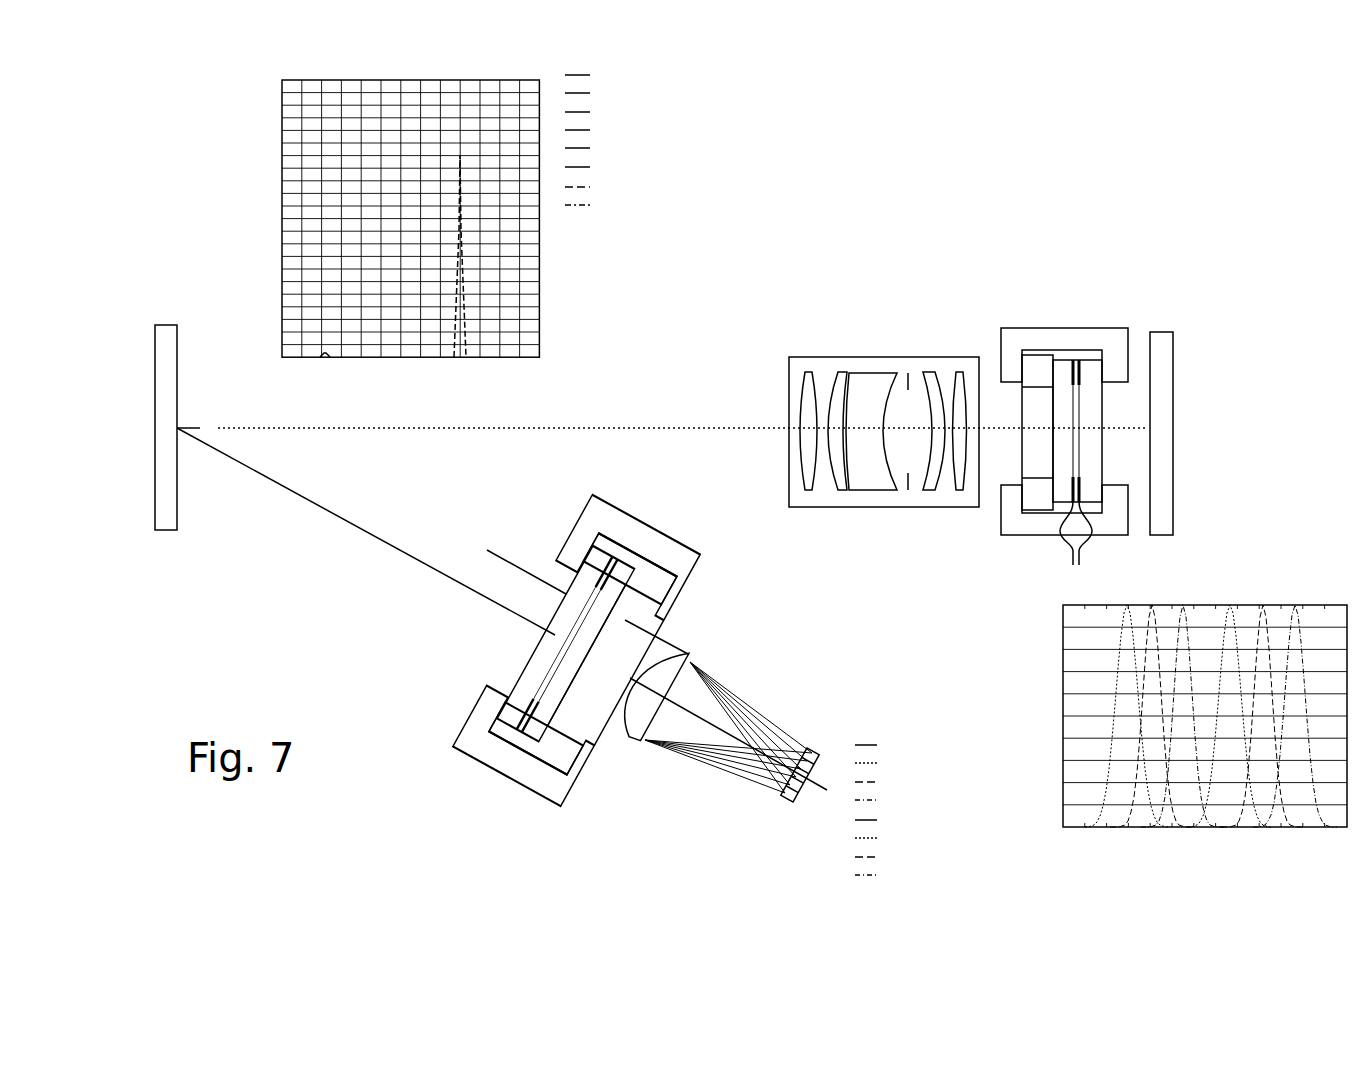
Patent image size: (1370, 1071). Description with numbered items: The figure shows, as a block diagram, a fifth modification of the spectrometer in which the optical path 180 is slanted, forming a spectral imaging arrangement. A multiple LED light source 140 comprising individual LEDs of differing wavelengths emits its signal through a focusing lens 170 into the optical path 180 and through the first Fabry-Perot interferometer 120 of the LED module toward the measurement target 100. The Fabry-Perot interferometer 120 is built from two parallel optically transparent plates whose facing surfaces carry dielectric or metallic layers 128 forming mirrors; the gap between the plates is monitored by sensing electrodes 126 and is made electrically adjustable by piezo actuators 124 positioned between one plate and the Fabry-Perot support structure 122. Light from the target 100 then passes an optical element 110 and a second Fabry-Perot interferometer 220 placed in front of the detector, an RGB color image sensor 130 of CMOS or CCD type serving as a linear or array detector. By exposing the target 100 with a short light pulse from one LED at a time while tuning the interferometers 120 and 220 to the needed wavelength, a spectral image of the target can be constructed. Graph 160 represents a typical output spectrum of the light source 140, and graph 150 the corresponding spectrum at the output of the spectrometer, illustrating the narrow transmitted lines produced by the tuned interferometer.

The measurement target 100 is at (155, 517).
The optical element 110 is at (880, 338).
The Fabry-Perot interferometer 120 is at (537, 650).
The Fabry-Perot support structure 122 is at (464, 782).
The piezo actuators 124 is at (1030, 365).
The sensing electrodes 126 is at (1077, 539).
The dielectric or metallic layers 128 is at (1080, 455).
The RGB color image sensor 130 is at (1160, 332).
The light source 140 is at (812, 748).
The graph 150 is at (540, 297).
The graph 160 is at (1275, 603).
The focusing lens 170 is at (690, 652).
The optical path 180 is at (332, 431).
The Fabry-Perot interferometer 220 is at (1028, 306).